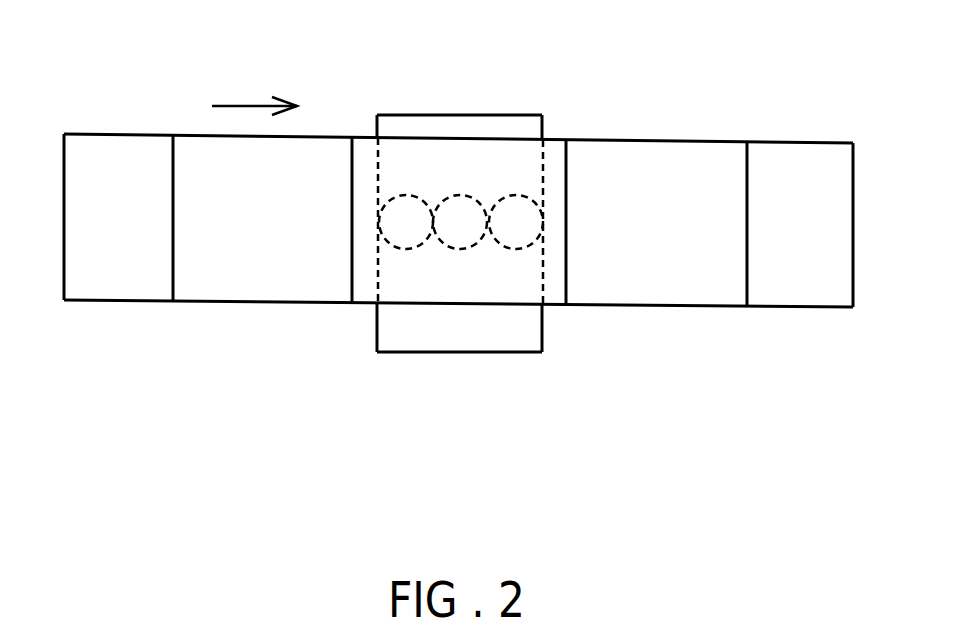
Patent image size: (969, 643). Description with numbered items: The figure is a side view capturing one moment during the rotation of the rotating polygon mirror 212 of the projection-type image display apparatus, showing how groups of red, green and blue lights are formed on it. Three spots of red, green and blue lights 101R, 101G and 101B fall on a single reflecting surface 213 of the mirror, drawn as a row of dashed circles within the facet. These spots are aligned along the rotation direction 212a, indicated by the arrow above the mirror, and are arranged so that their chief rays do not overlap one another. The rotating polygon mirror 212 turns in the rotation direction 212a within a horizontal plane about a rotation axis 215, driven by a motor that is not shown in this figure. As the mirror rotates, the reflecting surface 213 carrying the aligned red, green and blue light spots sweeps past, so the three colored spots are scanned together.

The rotating polygon mirror 212 is at (680, 142).
The rotation direction 212a is at (250, 105).
The reflecting surface 213 is at (553, 157).
The rotation axis 215 is at (542, 328).
The blue light 101B is at (398, 250).
The green light 101G is at (455, 250).
The red light 101R is at (508, 250).